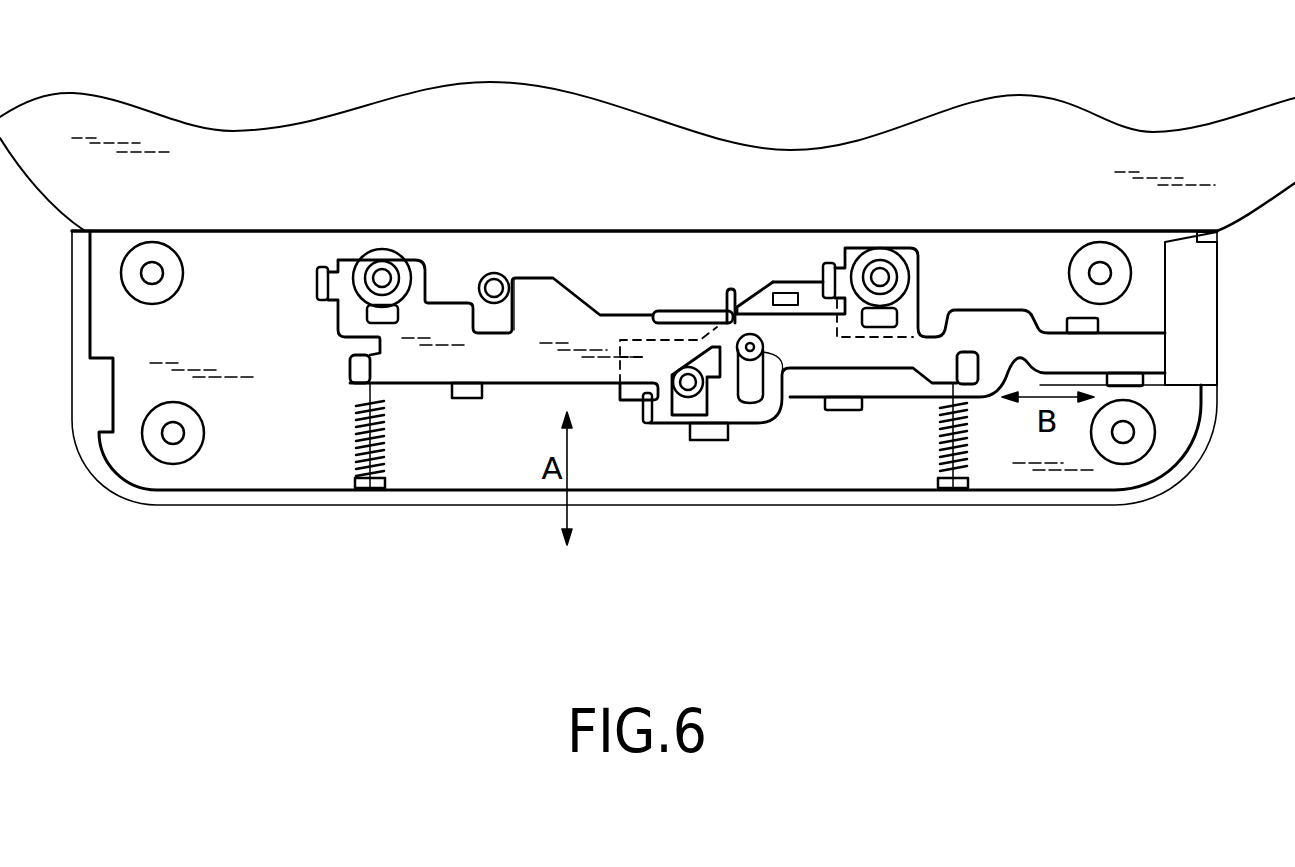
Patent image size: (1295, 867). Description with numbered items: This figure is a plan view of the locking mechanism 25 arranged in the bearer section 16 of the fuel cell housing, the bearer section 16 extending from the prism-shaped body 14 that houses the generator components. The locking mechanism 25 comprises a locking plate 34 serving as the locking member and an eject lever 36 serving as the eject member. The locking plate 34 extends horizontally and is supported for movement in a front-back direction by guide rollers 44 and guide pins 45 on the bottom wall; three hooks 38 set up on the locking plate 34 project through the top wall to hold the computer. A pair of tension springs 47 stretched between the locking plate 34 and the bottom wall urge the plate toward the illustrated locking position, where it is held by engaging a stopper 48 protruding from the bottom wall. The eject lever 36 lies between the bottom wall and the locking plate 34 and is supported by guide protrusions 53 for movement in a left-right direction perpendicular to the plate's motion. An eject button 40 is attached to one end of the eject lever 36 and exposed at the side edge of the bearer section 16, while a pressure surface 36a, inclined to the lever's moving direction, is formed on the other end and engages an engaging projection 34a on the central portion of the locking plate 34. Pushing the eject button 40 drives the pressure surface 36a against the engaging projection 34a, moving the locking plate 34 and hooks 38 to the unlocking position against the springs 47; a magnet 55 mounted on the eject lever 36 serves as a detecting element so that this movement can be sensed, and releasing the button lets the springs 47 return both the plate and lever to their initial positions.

The body 14 is at (962, 152).
The bearer section 16 is at (232, 470).
The locking mechanism 25 is at (610, 240).
The locking plate 34 is at (510, 366).
The engaging projection 34a is at (732, 288).
The eject lever 36 is at (998, 324).
The pressure surface 36a is at (752, 292).
The hooks 38 is at (325, 267).
The eject button 40 is at (1202, 315).
The guide rollers 44 is at (383, 248).
The guide pins 45 is at (491, 273).
The tension springs 47 is at (353, 418).
The stopper 48 is at (461, 400).
The guide protrusions 53 is at (1067, 320).
The magnet 55 is at (786, 292).